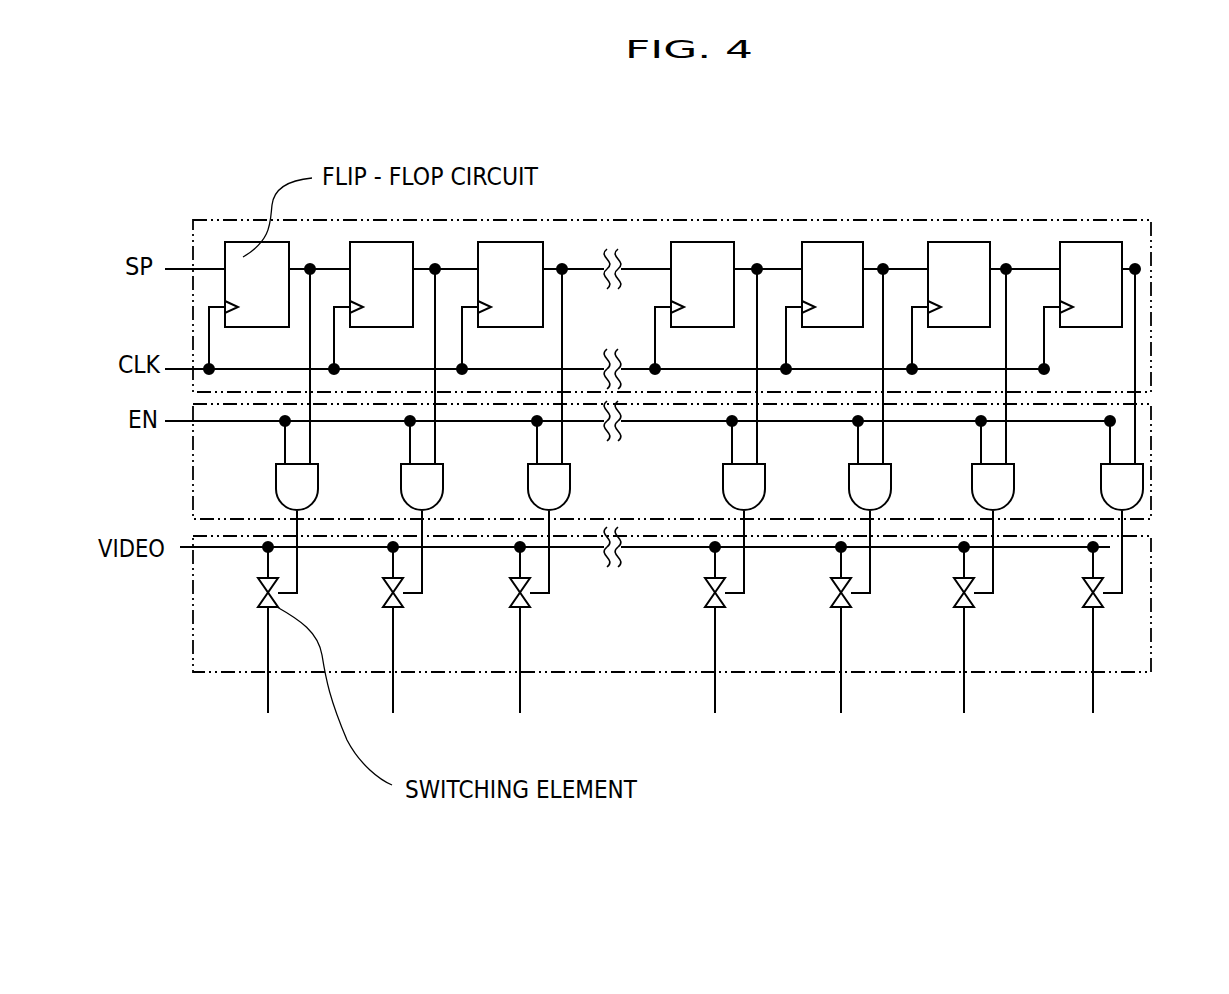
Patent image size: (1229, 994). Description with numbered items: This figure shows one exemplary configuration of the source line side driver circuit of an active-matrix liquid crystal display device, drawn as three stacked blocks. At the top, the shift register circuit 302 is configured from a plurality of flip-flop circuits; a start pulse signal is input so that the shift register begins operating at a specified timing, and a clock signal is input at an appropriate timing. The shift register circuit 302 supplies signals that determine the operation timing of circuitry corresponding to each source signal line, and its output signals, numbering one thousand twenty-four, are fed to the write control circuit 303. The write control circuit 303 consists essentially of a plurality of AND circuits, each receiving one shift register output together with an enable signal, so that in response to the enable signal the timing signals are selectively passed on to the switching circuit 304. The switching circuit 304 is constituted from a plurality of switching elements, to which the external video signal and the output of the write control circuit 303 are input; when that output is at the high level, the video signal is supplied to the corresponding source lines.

The shift register circuit 302 is at (1151, 332).
The write control circuit 303 is at (1151, 483).
The switching circuit 304 is at (1151, 607).